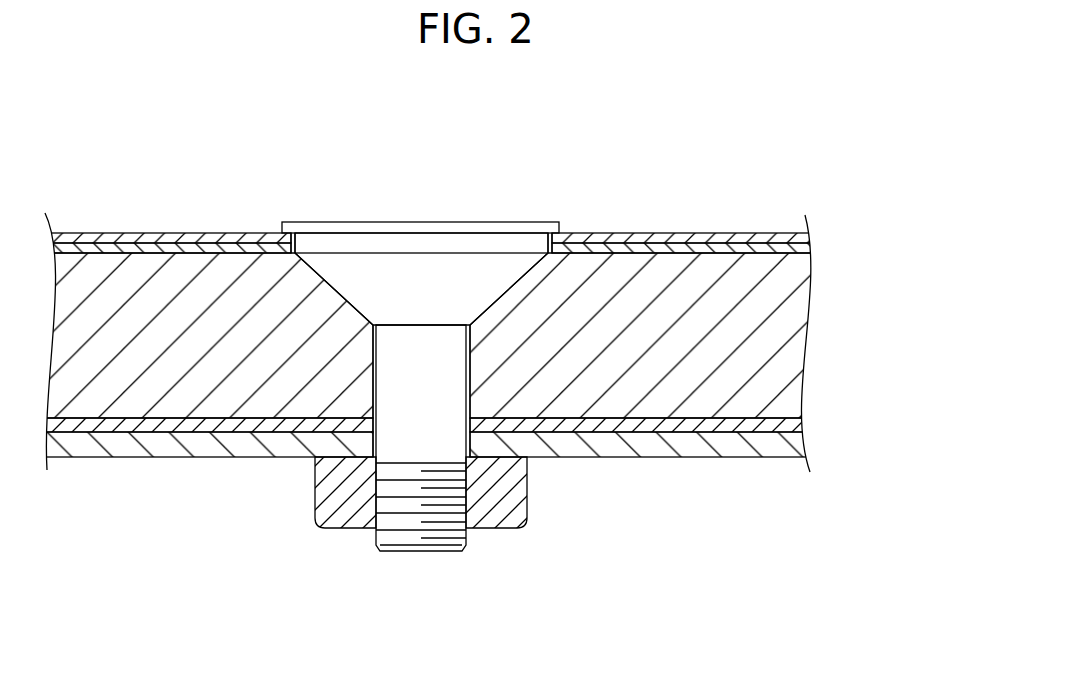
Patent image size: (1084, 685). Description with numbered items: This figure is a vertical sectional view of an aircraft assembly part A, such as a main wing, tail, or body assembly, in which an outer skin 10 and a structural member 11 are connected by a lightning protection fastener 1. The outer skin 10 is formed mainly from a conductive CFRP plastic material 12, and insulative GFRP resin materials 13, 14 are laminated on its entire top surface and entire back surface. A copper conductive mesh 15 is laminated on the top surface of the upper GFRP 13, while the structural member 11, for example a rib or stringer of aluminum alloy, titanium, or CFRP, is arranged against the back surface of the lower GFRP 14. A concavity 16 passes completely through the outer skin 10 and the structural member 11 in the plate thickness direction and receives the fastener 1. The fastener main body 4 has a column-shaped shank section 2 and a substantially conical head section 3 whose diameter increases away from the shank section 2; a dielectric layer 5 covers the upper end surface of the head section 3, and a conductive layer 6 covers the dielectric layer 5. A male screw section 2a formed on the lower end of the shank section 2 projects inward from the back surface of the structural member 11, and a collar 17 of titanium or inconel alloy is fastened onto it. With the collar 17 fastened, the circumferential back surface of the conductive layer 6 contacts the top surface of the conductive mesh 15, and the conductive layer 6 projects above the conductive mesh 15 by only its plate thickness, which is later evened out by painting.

The lightning protection fastener 1 is at (537, 143).
The shank section 2 is at (421, 388).
The male screw section 2a is at (442, 512).
The head section 3 is at (471, 283).
The fastener main body 4 is at (500, 155).
The dielectric layer 5 is at (520, 242).
The conductive layer 6 is at (368, 230).
The outer skin 10 is at (495, 335).
The structural member 11 is at (465, 453).
The plastic material 12 is at (793, 347).
The insulative resin material 13 is at (810, 248).
The insulative resin material 14 is at (800, 423).
The conductive mesh 15 is at (802, 238).
The concavity 16 is at (318, 263).
The collar 17 is at (510, 500).
The aircraft assembly part A is at (651, 168).